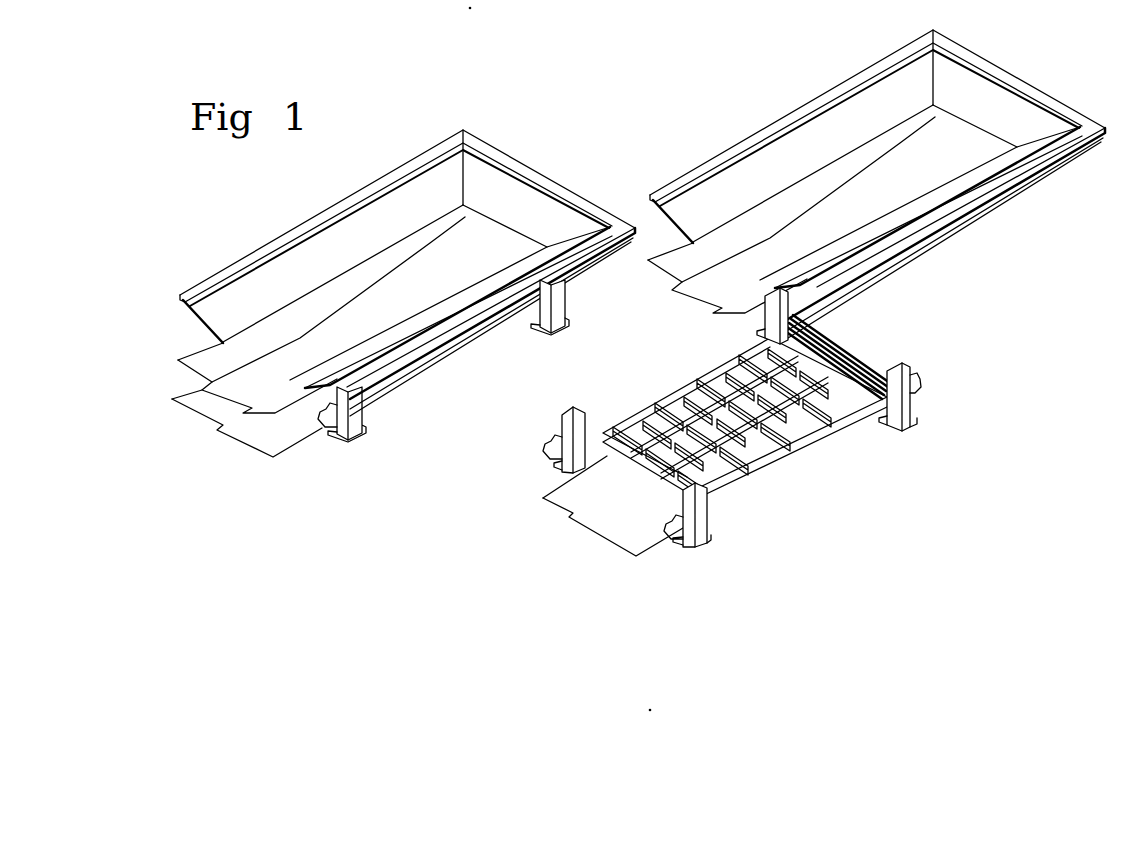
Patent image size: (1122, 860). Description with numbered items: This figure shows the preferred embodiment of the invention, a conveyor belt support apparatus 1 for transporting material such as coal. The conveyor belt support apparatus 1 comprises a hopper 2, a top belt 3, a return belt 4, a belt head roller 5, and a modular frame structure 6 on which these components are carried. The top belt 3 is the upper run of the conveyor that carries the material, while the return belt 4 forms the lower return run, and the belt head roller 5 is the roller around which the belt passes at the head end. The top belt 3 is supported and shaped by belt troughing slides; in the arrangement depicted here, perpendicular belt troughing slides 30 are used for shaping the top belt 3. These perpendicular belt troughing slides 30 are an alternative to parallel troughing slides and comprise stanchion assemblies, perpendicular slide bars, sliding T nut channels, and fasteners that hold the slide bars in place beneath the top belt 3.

The conveyor belt support apparatus 1 is at (290, 222).
The hopper 2 is at (1022, 183).
The top belt 3 is at (195, 359).
The return belt 4 is at (223, 426).
The belt head roller 5 is at (917, 370).
The modular frame structure 6 is at (557, 435).
The perpendicular belt troughing slides 30 is at (627, 410).